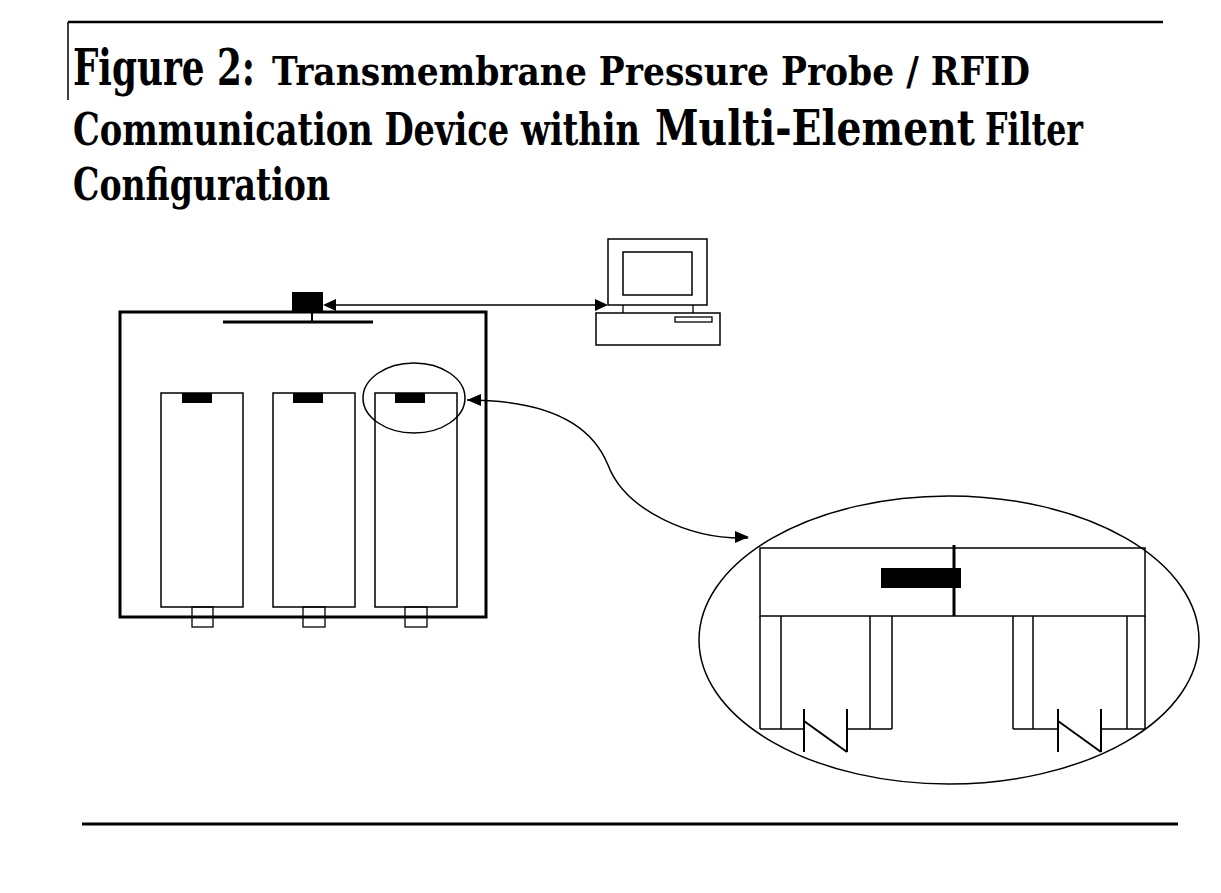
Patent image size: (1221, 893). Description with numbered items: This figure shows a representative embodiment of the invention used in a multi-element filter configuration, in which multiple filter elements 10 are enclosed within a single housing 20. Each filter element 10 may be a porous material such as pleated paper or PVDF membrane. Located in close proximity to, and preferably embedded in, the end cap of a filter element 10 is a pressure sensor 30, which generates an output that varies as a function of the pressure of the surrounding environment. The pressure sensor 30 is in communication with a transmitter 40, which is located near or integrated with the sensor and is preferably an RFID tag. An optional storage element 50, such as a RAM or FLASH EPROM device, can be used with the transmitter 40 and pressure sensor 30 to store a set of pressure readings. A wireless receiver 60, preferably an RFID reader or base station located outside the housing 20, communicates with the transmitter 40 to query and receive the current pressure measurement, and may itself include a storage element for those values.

The filter element 10 is at (405, 587).
The housing 20 is at (485, 520).
The pressure sensor 30 is at (200, 395).
The transmitter 40 is at (317, 395).
The storage element 50 is at (318, 293).
The wireless receiver 60 is at (678, 282).